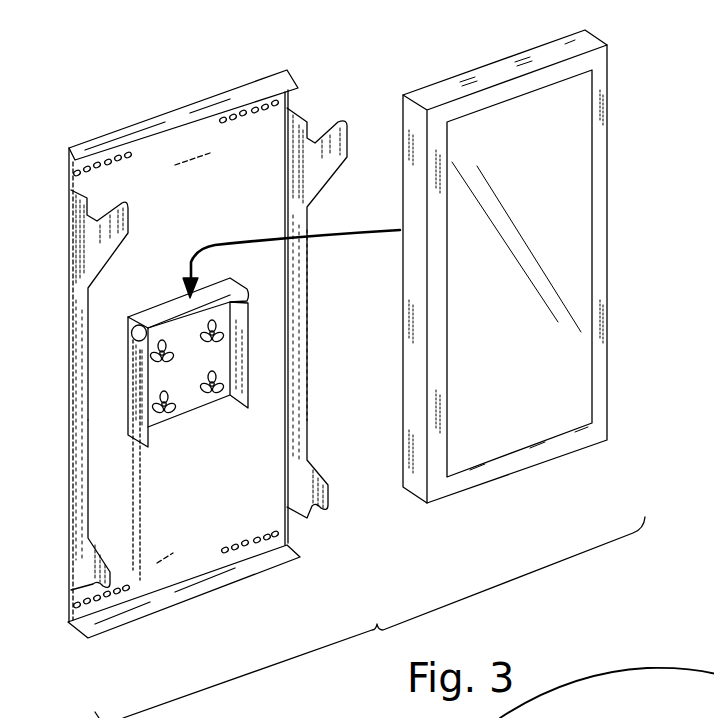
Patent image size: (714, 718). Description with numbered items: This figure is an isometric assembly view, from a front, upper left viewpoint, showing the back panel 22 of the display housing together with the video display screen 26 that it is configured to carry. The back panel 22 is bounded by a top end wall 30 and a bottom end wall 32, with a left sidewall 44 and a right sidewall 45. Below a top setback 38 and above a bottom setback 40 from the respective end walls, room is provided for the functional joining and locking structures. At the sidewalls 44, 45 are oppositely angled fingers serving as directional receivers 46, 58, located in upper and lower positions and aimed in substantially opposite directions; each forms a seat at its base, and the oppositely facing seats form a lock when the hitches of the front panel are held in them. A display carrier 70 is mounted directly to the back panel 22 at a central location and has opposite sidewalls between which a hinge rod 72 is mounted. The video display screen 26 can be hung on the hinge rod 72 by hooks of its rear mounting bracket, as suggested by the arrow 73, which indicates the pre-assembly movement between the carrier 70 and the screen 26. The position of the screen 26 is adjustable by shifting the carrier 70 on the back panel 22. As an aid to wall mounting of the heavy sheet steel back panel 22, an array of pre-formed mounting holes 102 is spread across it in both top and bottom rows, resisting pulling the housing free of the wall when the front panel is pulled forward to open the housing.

The back panel 22 is at (190, 339).
The video display screen 26 is at (648, 228).
The top end wall 30 is at (233, 102).
The bottom end wall 32 is at (197, 590).
The top setback 38 is at (193, 160).
The bottom setback 40 is at (170, 547).
The left sidewall 44 is at (76, 432).
The right sidewall 45 is at (312, 345).
The directional receiver 46 is at (97, 257).
The directional receiver 58 is at (90, 583).
The display carrier 70 is at (190, 412).
The hinge rod 72 is at (163, 323).
The arrow 73 is at (190, 262).
The mounting holes 102 is at (106, 155).